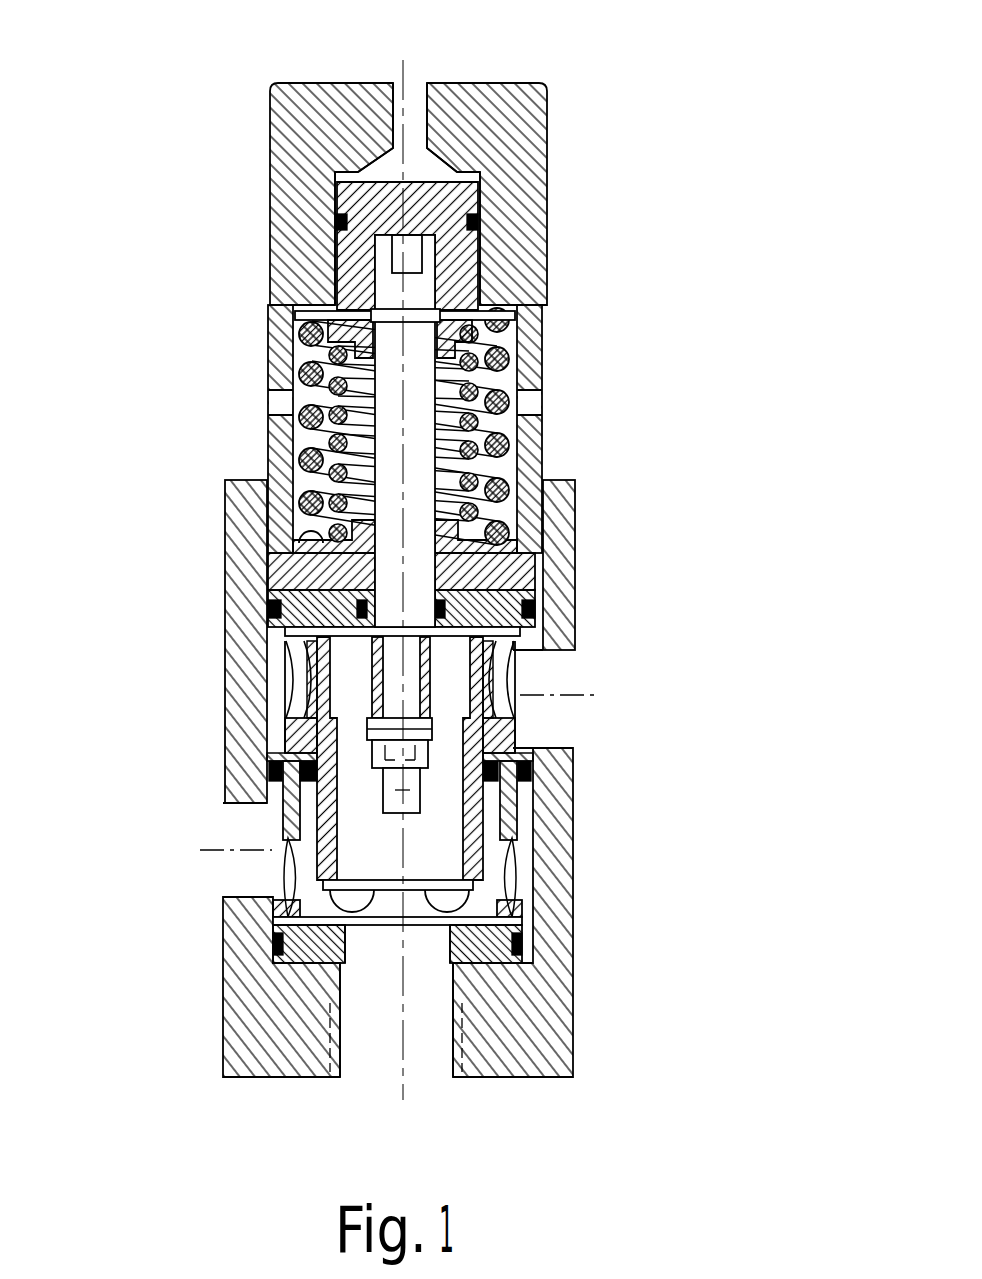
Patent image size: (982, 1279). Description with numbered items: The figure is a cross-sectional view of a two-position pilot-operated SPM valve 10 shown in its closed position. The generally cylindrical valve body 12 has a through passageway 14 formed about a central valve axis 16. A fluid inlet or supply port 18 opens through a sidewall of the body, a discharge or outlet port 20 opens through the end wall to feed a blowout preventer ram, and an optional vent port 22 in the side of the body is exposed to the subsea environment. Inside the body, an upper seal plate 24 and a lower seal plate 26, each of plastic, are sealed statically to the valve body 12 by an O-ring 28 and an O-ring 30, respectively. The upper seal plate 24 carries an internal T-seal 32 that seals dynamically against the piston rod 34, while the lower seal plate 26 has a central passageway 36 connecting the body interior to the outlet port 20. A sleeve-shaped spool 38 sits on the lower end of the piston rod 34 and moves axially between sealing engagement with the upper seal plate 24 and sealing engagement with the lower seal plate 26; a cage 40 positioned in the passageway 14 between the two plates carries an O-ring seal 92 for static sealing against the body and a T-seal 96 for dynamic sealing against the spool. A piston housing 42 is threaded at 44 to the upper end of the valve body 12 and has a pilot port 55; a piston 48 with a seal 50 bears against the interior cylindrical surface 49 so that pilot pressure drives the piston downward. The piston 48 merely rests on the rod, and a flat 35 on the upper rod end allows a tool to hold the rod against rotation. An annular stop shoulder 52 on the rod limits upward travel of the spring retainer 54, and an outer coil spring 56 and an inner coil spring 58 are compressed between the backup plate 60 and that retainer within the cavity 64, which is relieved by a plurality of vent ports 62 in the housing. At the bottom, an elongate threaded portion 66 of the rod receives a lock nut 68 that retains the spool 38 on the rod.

The SPM valve 10 is at (740, 280).
The valve body 12 is at (565, 887).
The through passageway 14 is at (304, 921).
The central valve axis 16 is at (403, 870).
The fluid inlet or supply port 18 is at (558, 677).
The discharge or outlet port 20 is at (440, 1037).
The vent port 22 is at (248, 873).
The upper seal plate 24 is at (285, 598).
The lower seal plate 26 is at (282, 962).
The O-ring 28 is at (272, 606).
The O-ring 30 is at (280, 940).
The internal T-seal 32 is at (405, 598).
The piston rod 34 is at (350, 631).
The flat 35 is at (413, 258).
The central passageway 36 is at (364, 958).
The spool 38 is at (323, 683).
The cage 40 is at (507, 820).
The piston housing 42 is at (287, 110).
The threaded connection 44 is at (543, 516).
The piston 48 is at (380, 205).
The interior cylindrical surface 49 is at (483, 200).
The seal 50 is at (333, 222).
The annular stop shoulder 52 is at (432, 315).
The spring retainer 54 is at (340, 312).
The pilot port 55 is at (412, 80).
The outer coil spring 56 is at (305, 378).
The inner coil spring 58 is at (337, 443).
The backup plate 60 is at (288, 573).
The vent ports 62 is at (528, 398).
The cavity 64 is at (505, 470).
The elongate threaded portion 66 is at (380, 796).
The lock nut 68 is at (272, 772).
The O-ring seal 92 is at (310, 780).
The T-seal 96 is at (272, 800).